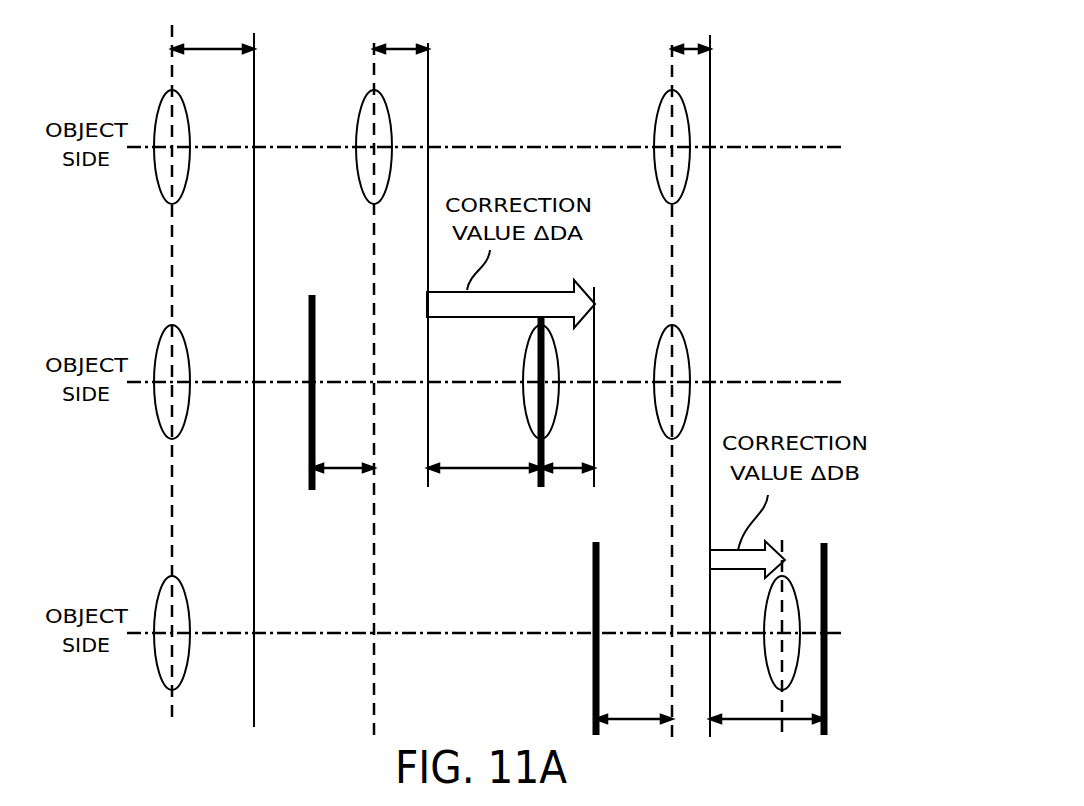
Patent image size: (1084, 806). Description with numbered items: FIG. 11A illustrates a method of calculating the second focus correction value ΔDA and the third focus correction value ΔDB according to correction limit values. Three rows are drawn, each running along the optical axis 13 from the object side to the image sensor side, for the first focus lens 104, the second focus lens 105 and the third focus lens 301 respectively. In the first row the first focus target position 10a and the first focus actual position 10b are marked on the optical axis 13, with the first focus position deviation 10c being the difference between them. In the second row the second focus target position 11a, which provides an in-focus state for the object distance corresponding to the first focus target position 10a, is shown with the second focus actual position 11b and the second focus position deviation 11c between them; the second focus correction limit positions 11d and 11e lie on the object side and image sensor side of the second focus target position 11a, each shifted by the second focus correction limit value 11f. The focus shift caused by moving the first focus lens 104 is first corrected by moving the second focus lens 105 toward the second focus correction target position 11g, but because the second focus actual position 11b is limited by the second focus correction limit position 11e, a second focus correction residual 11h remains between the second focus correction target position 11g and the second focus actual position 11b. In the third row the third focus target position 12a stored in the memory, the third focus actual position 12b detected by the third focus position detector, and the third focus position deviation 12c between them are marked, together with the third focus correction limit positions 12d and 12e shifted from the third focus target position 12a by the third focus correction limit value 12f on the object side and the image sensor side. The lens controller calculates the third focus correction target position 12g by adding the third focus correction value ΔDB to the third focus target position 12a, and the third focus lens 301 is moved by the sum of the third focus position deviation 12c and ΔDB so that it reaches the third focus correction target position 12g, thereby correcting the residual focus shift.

The first focus target position 10a is at (256, 370).
The first focus actual position 10b is at (175, 364).
The first focus position deviation 10c is at (213, 39).
The second focus target position 11a is at (430, 246).
The second focus actual position 11b is at (372, 371).
The second focus position deviation 11c is at (401, 39).
The second focus correction limit position 11d is at (320, 380).
The second focus correction limit position 11e is at (582, 292).
The second focus correction limit value 11f is at (426, 459).
The second focus correction target position 11g is at (607, 376).
The second focus correction residual 11h is at (567, 459).
The third focus target position 12a is at (713, 368).
The third focus actual position 12b is at (670, 369).
The third focus position deviation 12c is at (691, 37).
The third focus correction limit position 12d is at (600, 624).
The third focus correction limit position 12e is at (840, 625).
The third focus correction limit value 12f is at (710, 729).
The third focus correction target position 12g is at (783, 626).
The optical axis 13 is at (832, 146).
The first focus lens 104 is at (182, 103).
The second focus lens 105 is at (384, 103).
The third focus lens 301 is at (657, 112).